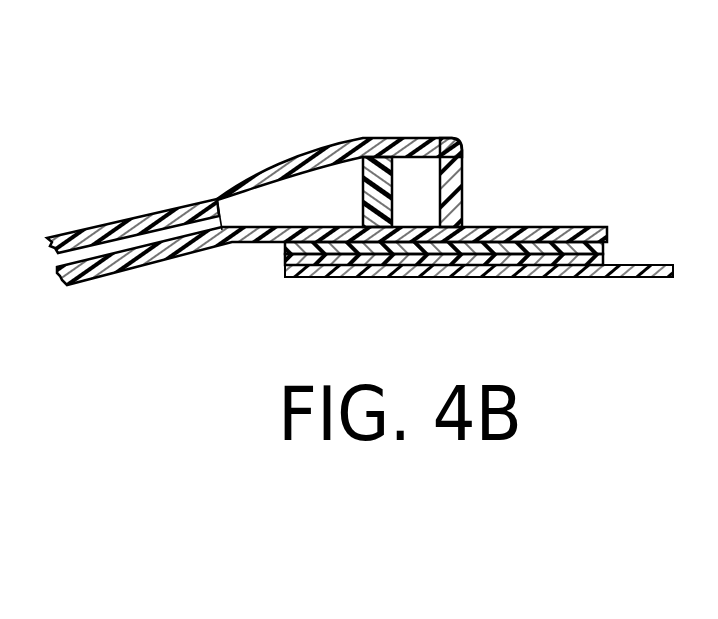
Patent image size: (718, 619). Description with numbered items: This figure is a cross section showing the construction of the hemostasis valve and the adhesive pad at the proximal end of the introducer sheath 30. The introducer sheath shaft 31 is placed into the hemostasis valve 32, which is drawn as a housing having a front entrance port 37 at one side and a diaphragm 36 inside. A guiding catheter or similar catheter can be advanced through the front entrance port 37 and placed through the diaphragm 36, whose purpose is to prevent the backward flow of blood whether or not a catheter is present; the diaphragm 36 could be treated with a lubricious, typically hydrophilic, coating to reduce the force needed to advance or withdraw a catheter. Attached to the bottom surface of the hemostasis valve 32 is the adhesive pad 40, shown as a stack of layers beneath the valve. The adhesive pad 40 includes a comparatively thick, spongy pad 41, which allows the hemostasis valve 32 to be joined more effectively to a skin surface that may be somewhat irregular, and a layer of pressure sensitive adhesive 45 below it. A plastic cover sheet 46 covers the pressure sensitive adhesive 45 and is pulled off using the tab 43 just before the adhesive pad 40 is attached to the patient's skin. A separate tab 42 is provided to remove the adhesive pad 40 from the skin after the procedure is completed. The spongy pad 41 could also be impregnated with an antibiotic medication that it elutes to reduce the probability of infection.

The introducer sheath 30 is at (456, 64).
The introducer sheath shaft 31 is at (153, 208).
The hemostasis valve 32 is at (310, 150).
The diaphragm 36 is at (362, 184).
The front entrance port 37 is at (463, 190).
The adhesive pad 40 is at (591, 164).
The spongy pad 41 is at (285, 243).
The tab 42 is at (28, 8).
The tab 43 is at (625, 272).
The pressure sensitive adhesive 45 is at (285, 260).
The plastic cover sheet 46 is at (557, 278).